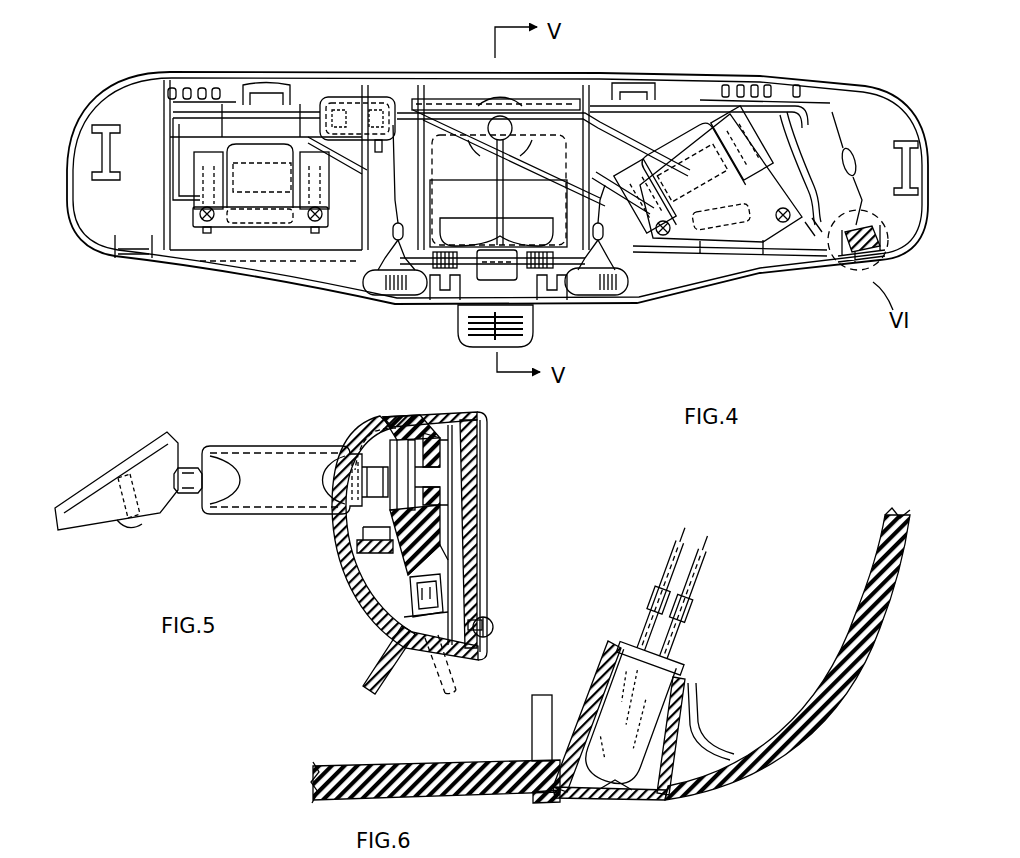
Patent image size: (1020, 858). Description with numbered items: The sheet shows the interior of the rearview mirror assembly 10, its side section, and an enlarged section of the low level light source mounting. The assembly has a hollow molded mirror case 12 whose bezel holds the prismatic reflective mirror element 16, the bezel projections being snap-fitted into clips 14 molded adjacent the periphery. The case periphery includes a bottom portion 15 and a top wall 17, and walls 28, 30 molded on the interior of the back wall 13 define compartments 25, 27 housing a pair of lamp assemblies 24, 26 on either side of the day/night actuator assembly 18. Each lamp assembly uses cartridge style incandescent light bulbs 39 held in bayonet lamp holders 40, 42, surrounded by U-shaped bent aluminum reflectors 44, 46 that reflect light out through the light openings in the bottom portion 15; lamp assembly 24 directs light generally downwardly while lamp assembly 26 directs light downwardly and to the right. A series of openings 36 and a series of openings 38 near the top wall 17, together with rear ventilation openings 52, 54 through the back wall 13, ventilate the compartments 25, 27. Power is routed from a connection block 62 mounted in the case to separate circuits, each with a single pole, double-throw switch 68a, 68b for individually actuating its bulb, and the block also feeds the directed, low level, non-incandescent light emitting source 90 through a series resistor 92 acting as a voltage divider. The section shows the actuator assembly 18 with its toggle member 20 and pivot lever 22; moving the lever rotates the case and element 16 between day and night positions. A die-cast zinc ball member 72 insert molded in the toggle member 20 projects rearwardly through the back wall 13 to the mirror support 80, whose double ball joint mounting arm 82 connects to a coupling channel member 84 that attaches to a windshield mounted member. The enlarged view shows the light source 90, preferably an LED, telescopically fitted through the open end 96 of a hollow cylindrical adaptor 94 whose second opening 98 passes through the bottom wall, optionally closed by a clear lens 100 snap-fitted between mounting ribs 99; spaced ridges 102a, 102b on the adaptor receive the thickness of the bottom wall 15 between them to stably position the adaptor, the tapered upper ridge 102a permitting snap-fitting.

In FIG. 5, the rearview mirror assembly 10 is at (505, 470).
In FIG. 4, the mirror case 12 is at (806, 73).
In FIG. 5, the mirror case 12 is at (482, 411).
In FIG. 6, the mirror case 12 is at (872, 640).
In FIG. 4, the back wall 13 is at (148, 225).
In FIG. 5, the back wall 13 is at (380, 600).
In FIG. 4, the clips 14 is at (78, 155).
In FIG. 4, the bottom portion 15 is at (423, 303).
In FIG. 6, the bottom portion 15 is at (358, 775).
In FIG. 5, the reflective rearview mirror element 16 is at (475, 450).
In FIG. 5, the top wall 17 is at (423, 412).
In FIG. 4, the day/night actuator assembly 18 is at (563, 97).
In FIG. 5, the day/night actuator assembly 18 is at (447, 483).
In FIG. 4, the toggle member 20 is at (560, 125).
In FIG. 5, the toggle member 20 is at (368, 527).
In FIG. 4, the pivot lever 22 is at (537, 327).
In FIG. 5, the pivot lever 22 is at (363, 669).
In FIG. 4, the lamp assembly 24 is at (217, 232).
In FIG. 5, the lamp assembly 24 is at (440, 408).
In FIG. 4, the compartment 25 is at (278, 266).
In FIG. 4, the lamp assembly 26 is at (770, 240).
In FIG. 4, the compartment 27 is at (810, 236).
In FIG. 4, the wall 28 is at (163, 180).
In FIG. 4, the wall 30 is at (785, 172).
In FIG. 4, the openings 36 is at (216, 88).
In FIG. 4, the openings 38 is at (768, 94).
In FIG. 4, the incandescent light bulbs 39 is at (292, 215).
In FIG. 4, the lamp holder 40 is at (200, 163).
In FIG. 4, the lamp holder 42 is at (717, 110).
In FIG. 4, the reflector 44 is at (250, 153).
In FIG. 4, the reflector 46 is at (693, 140).
In FIG. 4, the rear ventilation opening 52 is at (253, 213).
In FIG. 4, the rear ventilation opening 54 is at (735, 257).
In FIG. 4, the connection block 62 is at (358, 105).
In FIG. 4, the single pole, double-throw switch 68a is at (373, 290).
In FIG. 4, the single pole, double-throw switch 68b is at (590, 287).
In FIG. 5, the single pole, double-throw switch 68b is at (487, 616).
In FIG. 5, the ball member 72 is at (352, 434).
In FIG. 5, the mirror support 80 is at (207, 442).
In FIG. 5, the mounting arm 82 is at (260, 504).
In FIG. 5, the coupling channel member 84 is at (95, 513).
In FIG. 4, the light emitting source 90 is at (853, 272).
In FIG. 5, the light emitting source 90 is at (443, 587).
In FIG. 6, the light emitting source 90 is at (685, 655).
In FIG. 4, the resistor 92 is at (836, 172).
In FIG. 6, the cylindrical adaptor 94 is at (585, 695).
In FIG. 6, the open end 96 is at (600, 662).
In FIG. 6, the second opening 98 is at (575, 792).
In FIG. 6, the mounting ribs 99 is at (633, 800).
In FIG. 6, the lens 100 is at (603, 792).
In FIG. 6, the upper ridge 102a is at (680, 741).
In FIG. 6, the lower ridge 102b is at (670, 795).